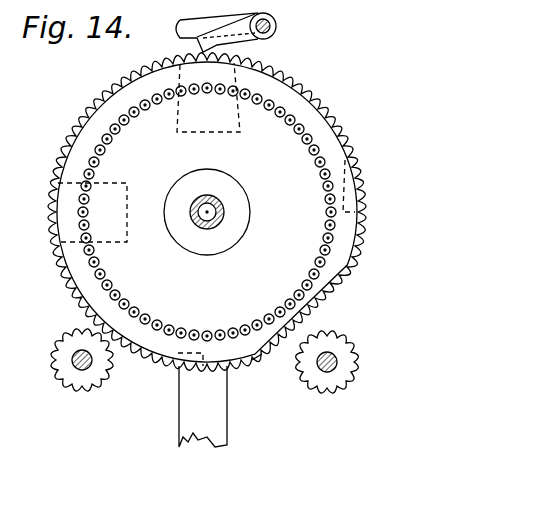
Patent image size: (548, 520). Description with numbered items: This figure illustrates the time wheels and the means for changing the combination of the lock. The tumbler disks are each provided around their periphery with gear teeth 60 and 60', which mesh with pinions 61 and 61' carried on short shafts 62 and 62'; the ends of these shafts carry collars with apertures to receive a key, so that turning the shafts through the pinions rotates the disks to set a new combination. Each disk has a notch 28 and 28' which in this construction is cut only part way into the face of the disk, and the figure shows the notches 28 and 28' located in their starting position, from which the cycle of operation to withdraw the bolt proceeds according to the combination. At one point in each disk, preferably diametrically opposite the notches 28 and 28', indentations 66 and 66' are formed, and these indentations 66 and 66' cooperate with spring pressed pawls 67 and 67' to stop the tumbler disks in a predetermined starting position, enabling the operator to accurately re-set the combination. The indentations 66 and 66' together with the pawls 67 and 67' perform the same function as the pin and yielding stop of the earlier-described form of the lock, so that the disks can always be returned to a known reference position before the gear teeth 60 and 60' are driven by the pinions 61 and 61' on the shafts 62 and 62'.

The indentation 66 is at (222, 212).
The indentation 66' is at (196, 333).
The gear teeth 60 is at (207, 250).
The gear teeth 60' is at (269, 390).
The notch 28 is at (99, 199).
The notch 28' is at (227, 109).
The spring pressed pawl 67 is at (204, 29).
The spring pressed pawl 67' is at (299, 38).
The short shaft 62 is at (59, 363).
The pinion 61 is at (91, 388).
The short shaft 62' is at (337, 345).
The pinion 61' is at (330, 394).